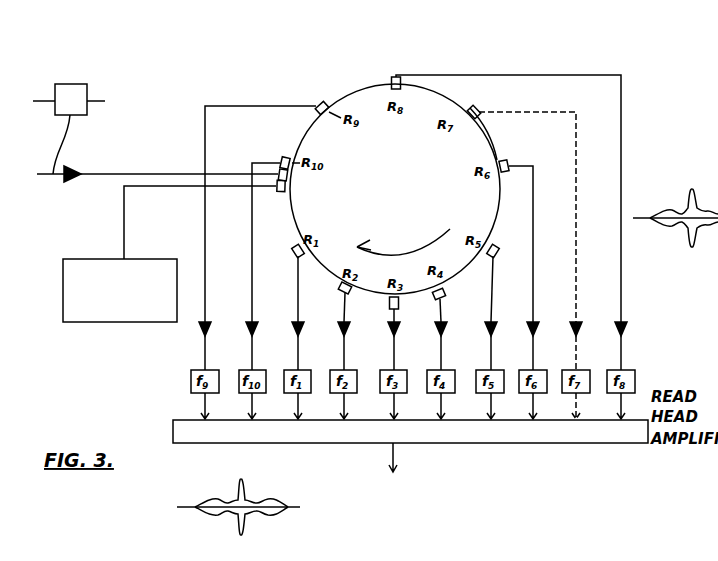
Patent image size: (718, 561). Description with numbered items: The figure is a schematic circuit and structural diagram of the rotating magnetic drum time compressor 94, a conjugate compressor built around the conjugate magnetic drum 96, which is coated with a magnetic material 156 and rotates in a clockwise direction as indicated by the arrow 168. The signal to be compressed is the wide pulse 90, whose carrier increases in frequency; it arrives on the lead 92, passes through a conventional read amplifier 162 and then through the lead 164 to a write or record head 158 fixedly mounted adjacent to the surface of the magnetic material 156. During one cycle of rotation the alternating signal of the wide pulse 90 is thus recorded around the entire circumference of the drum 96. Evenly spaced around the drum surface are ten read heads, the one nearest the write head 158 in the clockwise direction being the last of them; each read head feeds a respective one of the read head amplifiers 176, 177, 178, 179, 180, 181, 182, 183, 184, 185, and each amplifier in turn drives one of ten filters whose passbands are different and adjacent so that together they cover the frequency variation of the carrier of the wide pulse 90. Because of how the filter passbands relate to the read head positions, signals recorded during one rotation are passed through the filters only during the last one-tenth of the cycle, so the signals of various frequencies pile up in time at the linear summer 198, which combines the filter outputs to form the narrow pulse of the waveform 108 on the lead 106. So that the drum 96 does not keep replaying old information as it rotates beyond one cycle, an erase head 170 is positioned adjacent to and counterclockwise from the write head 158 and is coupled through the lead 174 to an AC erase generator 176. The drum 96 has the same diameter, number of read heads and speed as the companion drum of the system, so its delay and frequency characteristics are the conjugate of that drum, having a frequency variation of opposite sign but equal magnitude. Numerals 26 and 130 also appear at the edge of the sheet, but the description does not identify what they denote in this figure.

The wide pulse 90 is at (88, 83).
The lead 92 is at (55, 173).
The read amplifier 162 is at (82, 173).
The lead 164 is at (188, 173).
The lead 174 is at (170, 190).
The erase head 170 is at (282, 191).
The write or record head 158 is at (290, 176).
The magnetic material 156 is at (420, 114).
The conjugate magnetic drum 96 is at (480, 147).
The arrow 168 is at (436, 246).
The rotating magnetic drum time compressor 94 is at (408, 193).
The AC erase generator 176 is at (128, 316).
The read head amplifier 184 is at (206, 321).
The read head amplifier 185 is at (253, 321).
The read head amplifier 177 is at (347, 321).
The read head amplifier 178 is at (397, 321).
The read head amplifier 179 is at (445, 321).
The read head amplifier 180 is at (494, 321).
The read head amplifier 181 is at (536, 321).
The read head amplifier 182 is at (579, 321).
The read head amplifier 183 is at (649, 395).
The linear summer 198 is at (615, 446).
The lead 106 is at (290, 485).
The narrow pulse waveform 108 is at (222, 502).
The input waveform 26 is at (717, 157).
The signal 130 is at (708, 321).